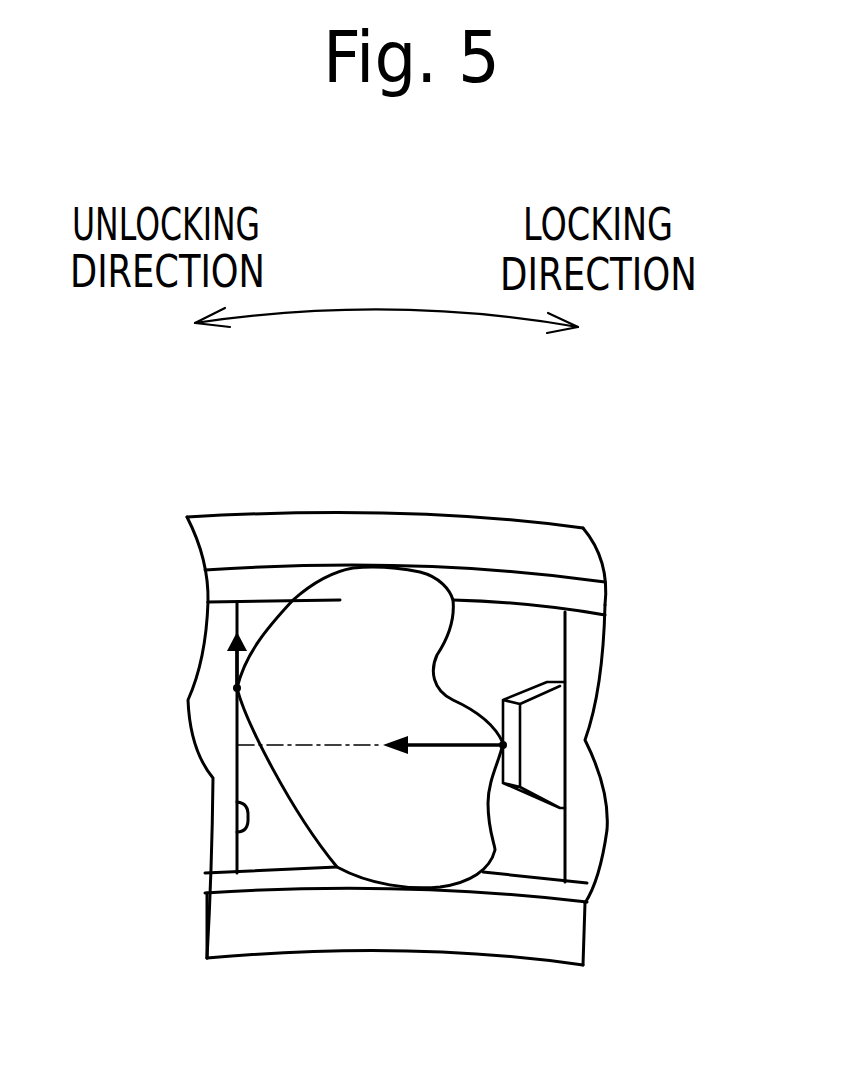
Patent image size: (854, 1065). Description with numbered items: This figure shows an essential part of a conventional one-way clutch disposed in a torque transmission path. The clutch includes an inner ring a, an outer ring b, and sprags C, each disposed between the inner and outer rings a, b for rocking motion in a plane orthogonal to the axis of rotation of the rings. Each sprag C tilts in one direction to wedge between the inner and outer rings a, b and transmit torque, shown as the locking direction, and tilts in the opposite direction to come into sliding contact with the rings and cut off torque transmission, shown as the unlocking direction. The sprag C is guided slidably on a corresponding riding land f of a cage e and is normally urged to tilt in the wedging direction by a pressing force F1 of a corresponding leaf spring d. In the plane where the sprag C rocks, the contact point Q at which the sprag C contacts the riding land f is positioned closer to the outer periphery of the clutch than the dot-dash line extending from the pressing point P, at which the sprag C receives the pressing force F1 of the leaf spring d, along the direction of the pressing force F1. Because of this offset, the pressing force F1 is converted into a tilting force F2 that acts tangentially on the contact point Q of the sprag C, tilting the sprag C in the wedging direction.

The inner ring a is at (585, 928).
The outer ring b is at (597, 551).
The sprag C is at (323, 580).
The leaf spring d is at (520, 807).
The cage e is at (597, 663).
The riding land f is at (236, 835).
The pressing point P is at (503, 743).
The contact point Q is at (237, 688).
The pressing force F1 is at (468, 746).
The tilting force F2 is at (236, 655).